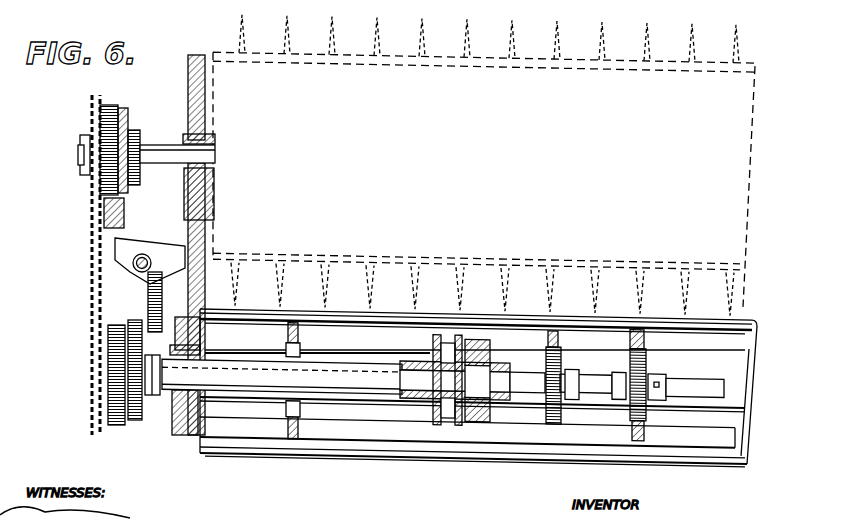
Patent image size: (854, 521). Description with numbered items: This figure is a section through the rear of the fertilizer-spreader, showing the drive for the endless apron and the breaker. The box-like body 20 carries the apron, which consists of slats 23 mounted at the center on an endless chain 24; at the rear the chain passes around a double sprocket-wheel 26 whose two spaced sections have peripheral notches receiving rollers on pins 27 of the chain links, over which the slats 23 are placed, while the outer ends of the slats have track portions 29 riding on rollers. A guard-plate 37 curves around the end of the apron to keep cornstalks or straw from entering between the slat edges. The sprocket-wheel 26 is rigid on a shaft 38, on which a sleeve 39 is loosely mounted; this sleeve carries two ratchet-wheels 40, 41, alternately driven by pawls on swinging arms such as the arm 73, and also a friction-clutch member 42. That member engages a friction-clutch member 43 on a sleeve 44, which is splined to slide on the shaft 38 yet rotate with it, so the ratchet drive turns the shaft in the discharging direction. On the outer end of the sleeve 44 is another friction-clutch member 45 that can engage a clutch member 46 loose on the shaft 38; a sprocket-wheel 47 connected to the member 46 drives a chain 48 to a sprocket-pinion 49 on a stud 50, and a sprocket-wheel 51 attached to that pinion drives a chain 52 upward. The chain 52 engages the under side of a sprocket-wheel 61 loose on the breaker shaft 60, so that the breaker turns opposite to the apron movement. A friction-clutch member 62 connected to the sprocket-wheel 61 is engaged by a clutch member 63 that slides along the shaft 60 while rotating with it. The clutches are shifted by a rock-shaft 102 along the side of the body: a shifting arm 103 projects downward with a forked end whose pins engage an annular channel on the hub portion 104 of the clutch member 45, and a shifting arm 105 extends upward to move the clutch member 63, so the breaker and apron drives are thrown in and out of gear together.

The box-like body 20 is at (197, 55).
The slats 23 is at (340, 332).
The endless chain 24 is at (638, 440).
The sprocket-wheel 26 is at (657, 400).
The pins 27 is at (640, 330).
The track portions 29 is at (294, 325).
The guard-plate 37 is at (250, 458).
The shaft 38 is at (706, 396).
The sleeve 39 is at (512, 374).
The ratchet-wheel 40 is at (560, 425).
The ratchet-wheel 41 is at (472, 420).
The friction-clutch member 42 is at (458, 420).
The friction-clutch member 43 is at (438, 418).
The sleeve 44 is at (365, 398).
The friction-clutch member 45 is at (136, 421).
The clutch member 46 is at (114, 426).
The sprocket-wheel 47 is at (90, 406).
The chain 48 is at (92, 278).
The sprocket-pinion 49 is at (150, 257).
The stud 50 is at (210, 192).
The sprocket-wheel 51 is at (82, 236).
The chain 52 is at (92, 312).
The shaft 60 is at (214, 158).
The sprocket-wheel 61 is at (90, 115).
The friction-clutch member 62 is at (110, 108).
The clutch member 63 is at (126, 118).
The arm 73 is at (575, 350).
The rock-shaft 102 is at (138, 272).
The shifting arm 103 is at (148, 310).
The hub portion 104 is at (160, 392).
The shifting arm 105 is at (122, 253).